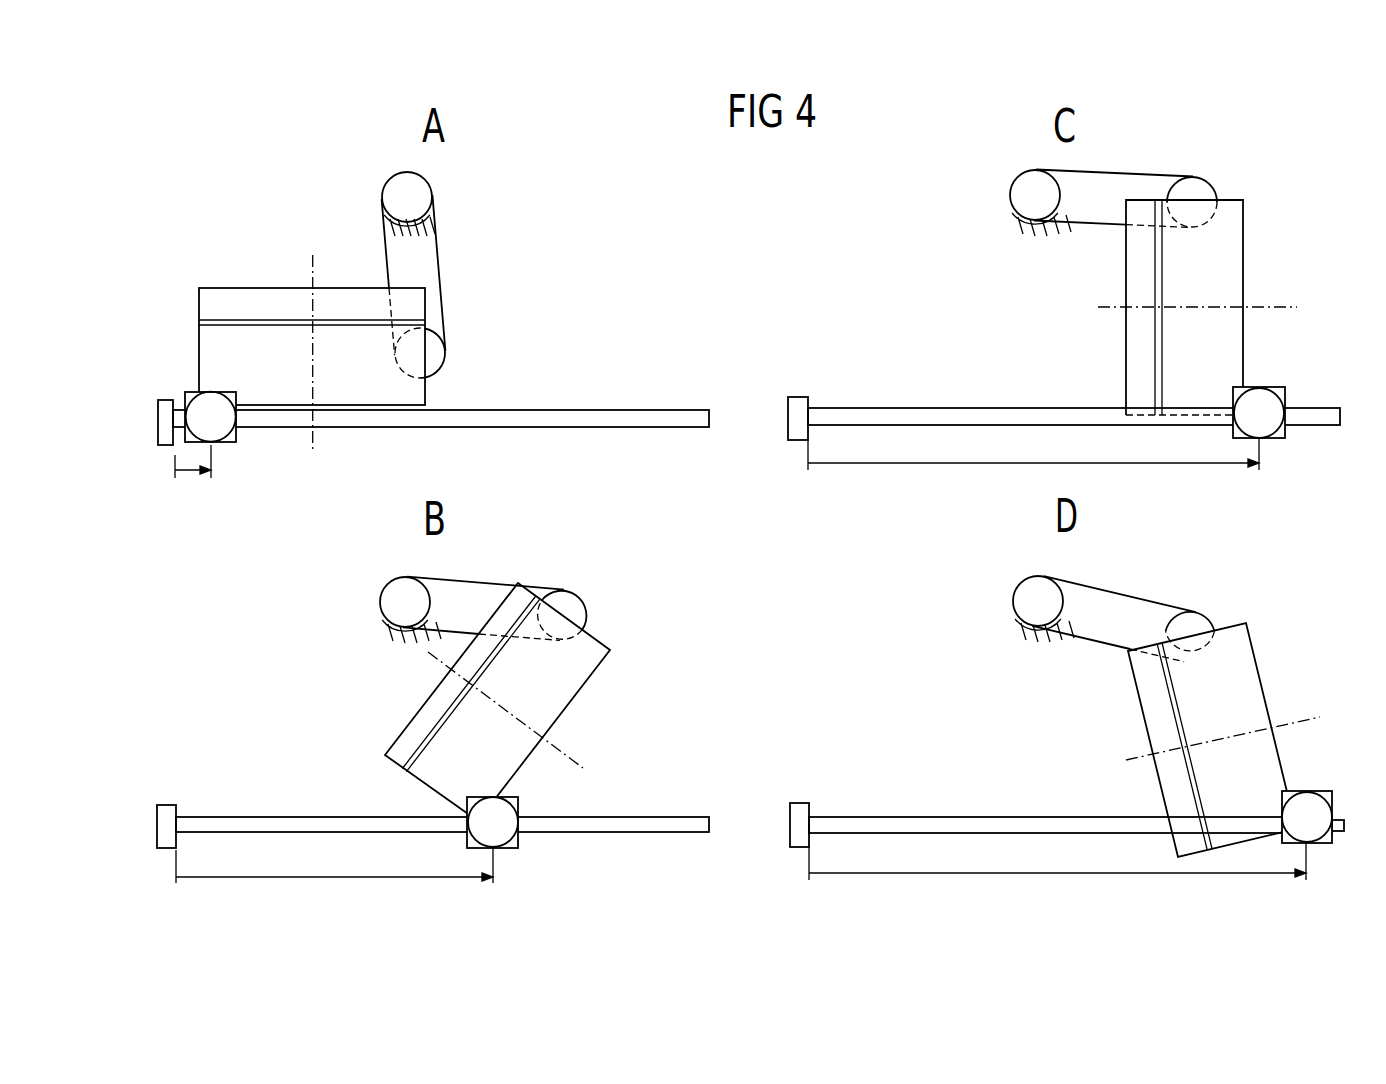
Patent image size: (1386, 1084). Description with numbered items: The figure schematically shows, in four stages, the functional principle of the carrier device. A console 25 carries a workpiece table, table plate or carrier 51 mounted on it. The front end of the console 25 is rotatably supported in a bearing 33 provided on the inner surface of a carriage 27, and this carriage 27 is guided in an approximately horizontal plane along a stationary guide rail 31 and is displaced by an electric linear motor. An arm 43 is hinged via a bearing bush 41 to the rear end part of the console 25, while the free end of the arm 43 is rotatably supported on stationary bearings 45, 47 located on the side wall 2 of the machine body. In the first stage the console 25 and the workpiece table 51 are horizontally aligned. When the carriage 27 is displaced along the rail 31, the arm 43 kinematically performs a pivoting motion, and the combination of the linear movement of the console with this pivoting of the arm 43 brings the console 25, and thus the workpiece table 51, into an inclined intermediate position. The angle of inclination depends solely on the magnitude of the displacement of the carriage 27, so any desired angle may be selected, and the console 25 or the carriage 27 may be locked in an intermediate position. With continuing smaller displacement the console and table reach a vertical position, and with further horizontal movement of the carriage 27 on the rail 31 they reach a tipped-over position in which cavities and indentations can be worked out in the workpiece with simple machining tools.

The side wall 2 is at (770, 509).
The console 25 is at (755, 528).
The carriage 27 is at (784, 630).
The guide rail 31 is at (750, 600).
The bearing 33 is at (761, 590).
The bearing bush 41 is at (830, 408).
The arm 43 is at (763, 416).
The stationary bearing 45 is at (695, 398).
The stationary bearing 47 is at (700, 433).
The workpiece table 51 is at (705, 525).